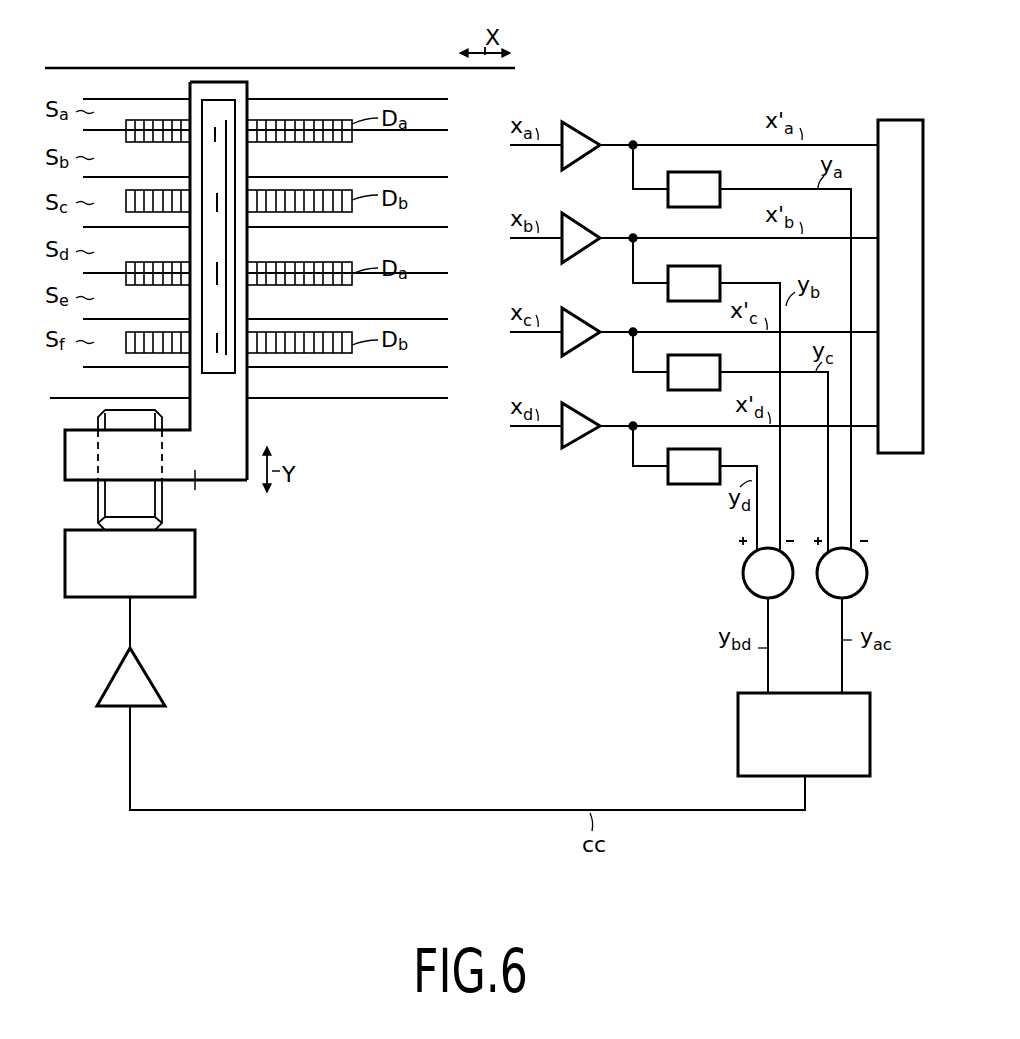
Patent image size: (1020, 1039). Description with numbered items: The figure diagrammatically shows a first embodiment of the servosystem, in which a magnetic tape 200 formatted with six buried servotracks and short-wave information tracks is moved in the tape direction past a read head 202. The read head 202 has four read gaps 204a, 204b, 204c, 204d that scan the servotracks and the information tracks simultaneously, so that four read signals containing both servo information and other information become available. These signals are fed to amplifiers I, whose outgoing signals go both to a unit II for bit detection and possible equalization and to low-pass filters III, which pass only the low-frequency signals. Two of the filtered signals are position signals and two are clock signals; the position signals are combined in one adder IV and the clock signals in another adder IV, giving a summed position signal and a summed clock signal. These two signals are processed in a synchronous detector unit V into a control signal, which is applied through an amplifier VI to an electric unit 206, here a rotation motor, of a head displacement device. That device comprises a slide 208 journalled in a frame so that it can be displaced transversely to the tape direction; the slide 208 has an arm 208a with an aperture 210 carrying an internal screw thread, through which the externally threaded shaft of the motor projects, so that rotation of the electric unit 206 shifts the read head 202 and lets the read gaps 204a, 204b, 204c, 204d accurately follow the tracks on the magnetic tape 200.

The magnetic tape 200 is at (360, 78).
The read head 202 is at (225, 110).
The read gap 204a is at (215, 133).
The read gap 204b is at (217, 200).
The read gap 204c is at (217, 272).
The read gap 204d is at (217, 345).
The electric unit 206 is at (182, 563).
The slide 208 is at (236, 421).
The arm 208a is at (201, 495).
The aperture 210 is at (120, 452).
The amplifiers I is at (600, 100).
The unit for bit detection and possible equalization II is at (897, 118).
The low-pass filters III is at (665, 502).
The adders IV is at (677, 566).
The synchronous detector unit V is at (737, 738).
The amplifier VI is at (205, 699).